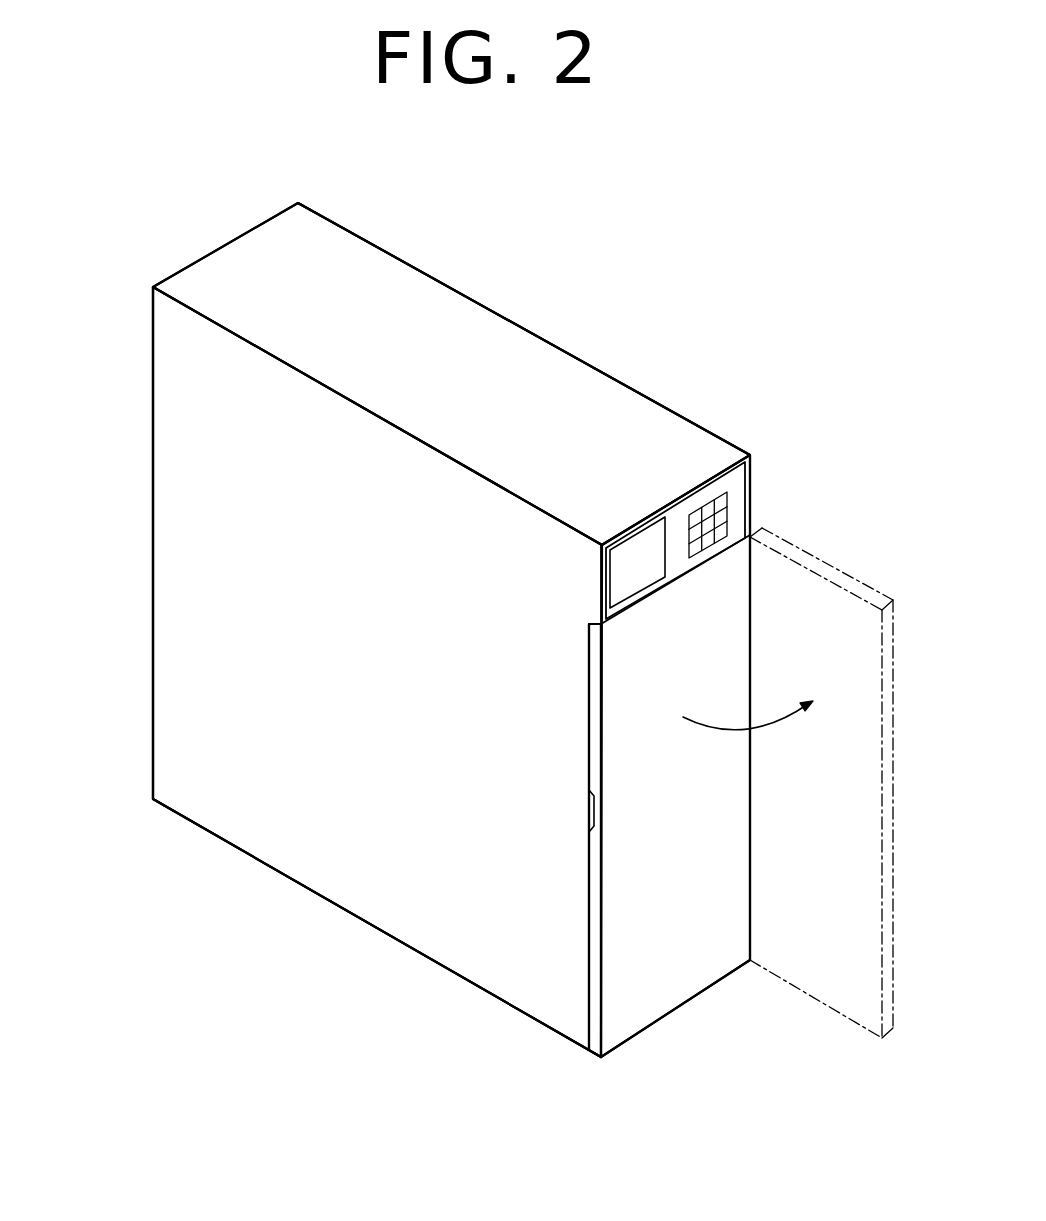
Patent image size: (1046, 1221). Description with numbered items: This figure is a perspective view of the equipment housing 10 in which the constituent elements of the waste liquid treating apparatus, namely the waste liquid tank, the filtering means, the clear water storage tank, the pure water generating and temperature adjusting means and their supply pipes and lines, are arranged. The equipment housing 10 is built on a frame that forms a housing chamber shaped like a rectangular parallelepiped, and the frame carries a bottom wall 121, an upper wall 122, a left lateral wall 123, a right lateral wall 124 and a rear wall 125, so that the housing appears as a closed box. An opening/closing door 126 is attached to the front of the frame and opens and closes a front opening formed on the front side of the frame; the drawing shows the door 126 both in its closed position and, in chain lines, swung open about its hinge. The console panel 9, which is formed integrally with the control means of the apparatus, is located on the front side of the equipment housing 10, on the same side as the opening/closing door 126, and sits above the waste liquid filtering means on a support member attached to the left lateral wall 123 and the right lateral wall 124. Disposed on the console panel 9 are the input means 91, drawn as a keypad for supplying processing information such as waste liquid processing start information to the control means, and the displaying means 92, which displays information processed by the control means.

The equipment housing 10 is at (538, 280).
The console panel 9 is at (752, 473).
The input means 91 is at (725, 513).
The displaying means 92 is at (637, 548).
The bottom wall 121 is at (530, 1018).
The upper wall 122 is at (545, 375).
The left lateral wall 123 is at (223, 642).
The right lateral wall 124 is at (421, 268).
The rear wall 125 is at (152, 427).
The opening/closing door 126 is at (840, 572).